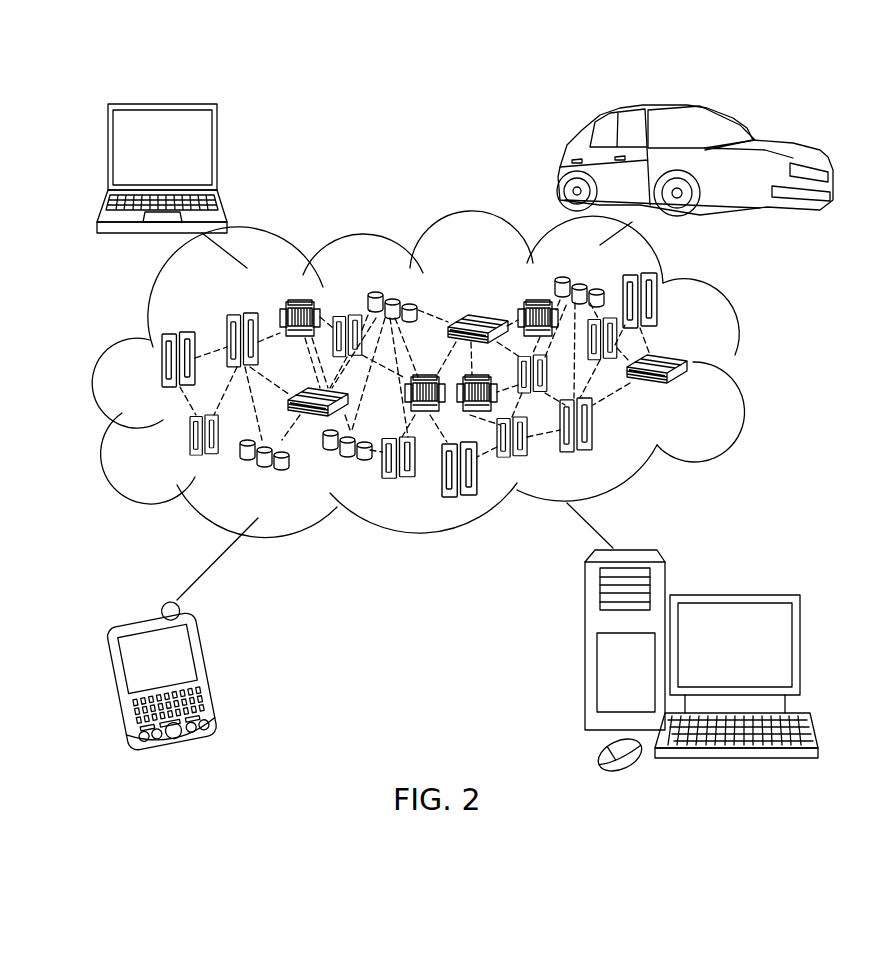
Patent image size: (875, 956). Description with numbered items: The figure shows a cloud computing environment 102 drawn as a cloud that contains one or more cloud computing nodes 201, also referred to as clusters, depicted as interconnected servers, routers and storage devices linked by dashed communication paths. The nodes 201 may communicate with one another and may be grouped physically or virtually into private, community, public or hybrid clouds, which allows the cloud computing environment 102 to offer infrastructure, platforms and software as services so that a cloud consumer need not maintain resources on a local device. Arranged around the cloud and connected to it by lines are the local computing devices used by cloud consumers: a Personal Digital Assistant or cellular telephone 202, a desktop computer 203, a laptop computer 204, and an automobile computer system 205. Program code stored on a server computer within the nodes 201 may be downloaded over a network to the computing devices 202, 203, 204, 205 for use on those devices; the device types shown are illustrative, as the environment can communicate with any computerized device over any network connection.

The cloud computing environment 102 is at (735, 367).
The cloud computing nodes 201 is at (689, 391).
The Personal Digital Assistant (PDA) or cellular telephone 202 is at (208, 663).
The desktop computer 203 is at (733, 595).
The laptop computer 204 is at (217, 152).
The automobile computer system 205 is at (560, 163).